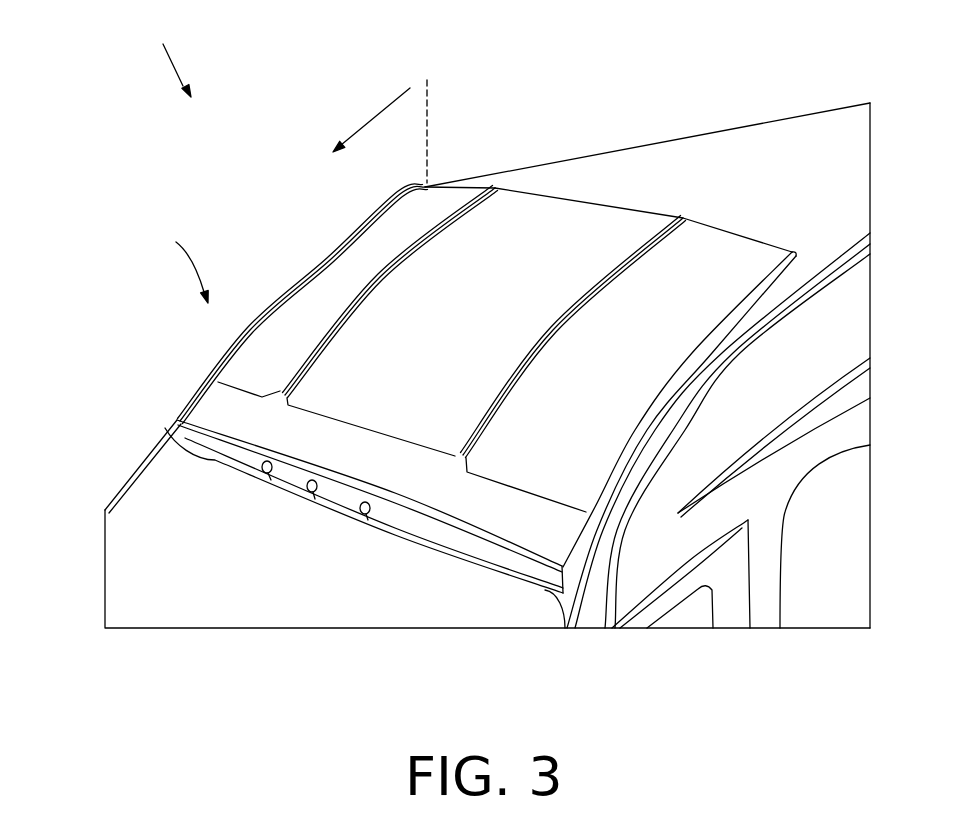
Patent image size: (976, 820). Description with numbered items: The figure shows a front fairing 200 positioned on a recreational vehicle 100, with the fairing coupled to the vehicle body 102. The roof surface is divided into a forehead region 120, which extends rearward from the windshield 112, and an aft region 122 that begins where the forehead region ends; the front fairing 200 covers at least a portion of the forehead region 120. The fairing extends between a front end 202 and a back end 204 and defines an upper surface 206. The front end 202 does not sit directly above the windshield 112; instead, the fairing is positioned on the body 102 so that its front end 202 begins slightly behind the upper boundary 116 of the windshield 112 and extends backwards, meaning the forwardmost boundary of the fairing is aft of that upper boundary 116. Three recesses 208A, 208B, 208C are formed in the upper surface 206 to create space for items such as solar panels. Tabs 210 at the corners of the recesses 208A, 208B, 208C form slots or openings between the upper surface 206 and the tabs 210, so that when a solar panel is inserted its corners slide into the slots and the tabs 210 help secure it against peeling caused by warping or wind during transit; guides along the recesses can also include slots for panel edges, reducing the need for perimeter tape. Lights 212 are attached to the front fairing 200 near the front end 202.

The recreational vehicle 100 is at (150, 59).
The body 102 is at (848, 307).
The windshield 112 is at (143, 588).
The upper boundary 116 is at (177, 441).
The forehead region 120 is at (380, 129).
The aft region 122 is at (712, 160).
The front fairing 200 is at (167, 266).
The front end 202 is at (175, 422).
The back end 204 is at (533, 197).
The upper surface 206 is at (216, 391).
The recess 208A is at (314, 300).
The recess 208B is at (486, 337).
The recess 208C is at (631, 440).
The tabs 210 is at (460, 452).
The lights 212 is at (360, 519).